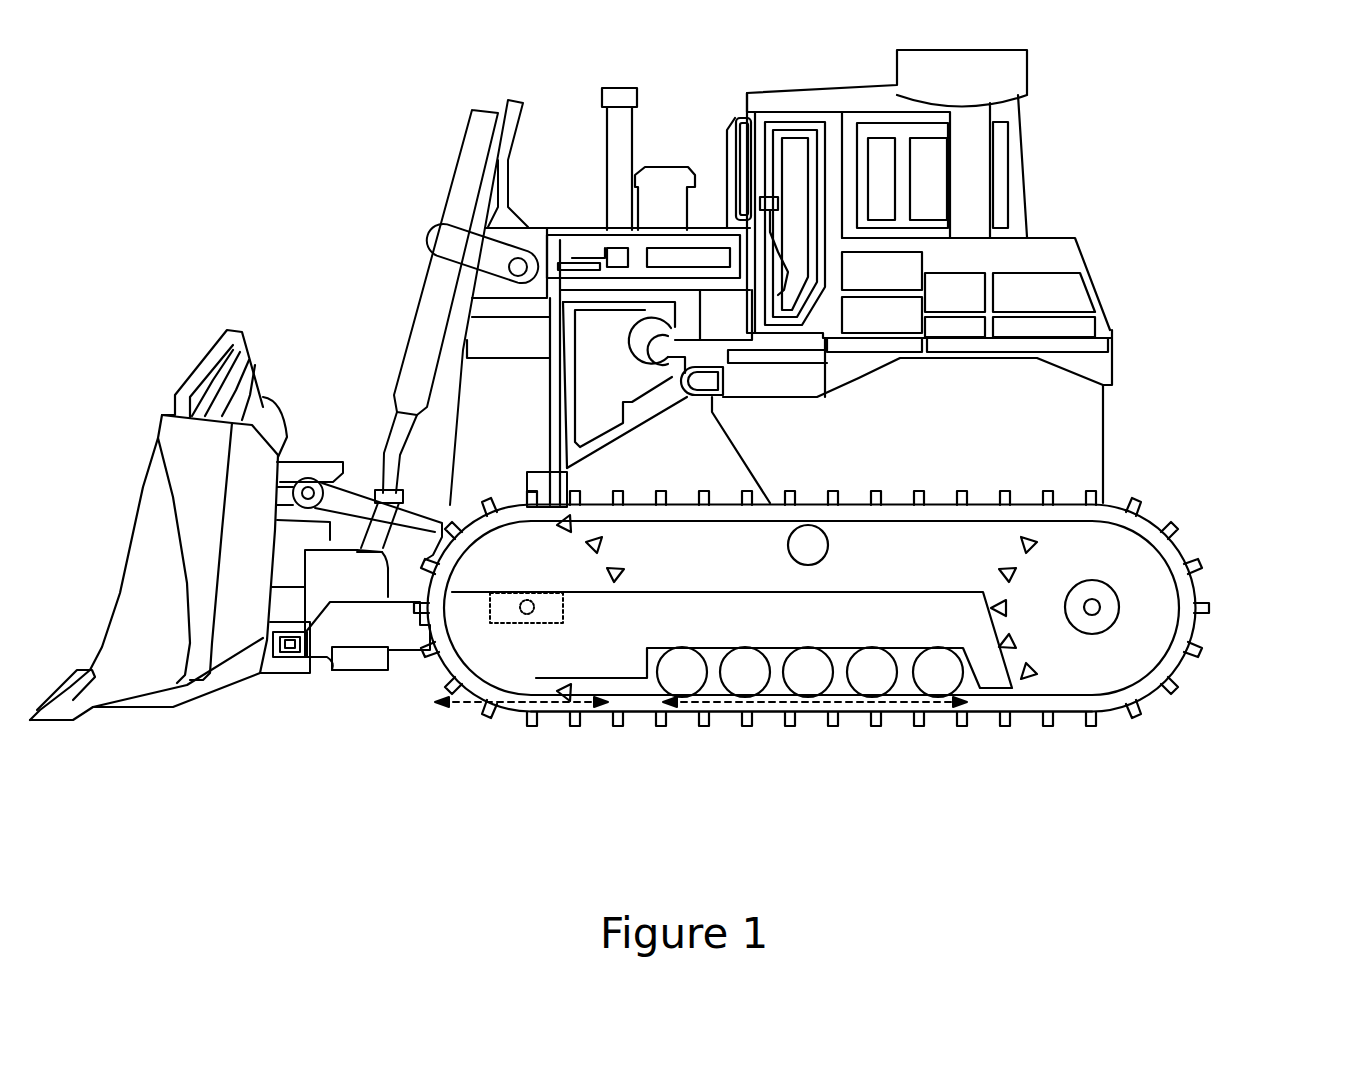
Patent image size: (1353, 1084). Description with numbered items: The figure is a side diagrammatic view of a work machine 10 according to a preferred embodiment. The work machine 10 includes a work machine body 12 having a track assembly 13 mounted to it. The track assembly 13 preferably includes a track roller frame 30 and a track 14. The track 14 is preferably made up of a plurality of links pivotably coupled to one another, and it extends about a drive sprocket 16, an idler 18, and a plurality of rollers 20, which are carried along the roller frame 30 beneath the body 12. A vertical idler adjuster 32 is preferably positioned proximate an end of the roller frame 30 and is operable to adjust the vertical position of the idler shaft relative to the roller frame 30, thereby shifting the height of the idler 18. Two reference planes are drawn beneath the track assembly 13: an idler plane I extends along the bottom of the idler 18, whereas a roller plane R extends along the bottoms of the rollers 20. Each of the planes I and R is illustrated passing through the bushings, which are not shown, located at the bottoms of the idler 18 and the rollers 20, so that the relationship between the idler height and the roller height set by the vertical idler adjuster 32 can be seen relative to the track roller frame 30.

The work machine 10 is at (689, 426).
The work machine body 12 is at (1057, 460).
The track assembly 13 is at (1188, 676).
The track 14 is at (1007, 707).
The drive sprocket 16 is at (1136, 570).
The idler 18 is at (468, 660).
The rollers 20 is at (875, 665).
The track roller frame 30 is at (622, 652).
The vertical idler adjuster 32 is at (500, 602).
The idler plane I is at (510, 712).
The roller plane R is at (748, 707).